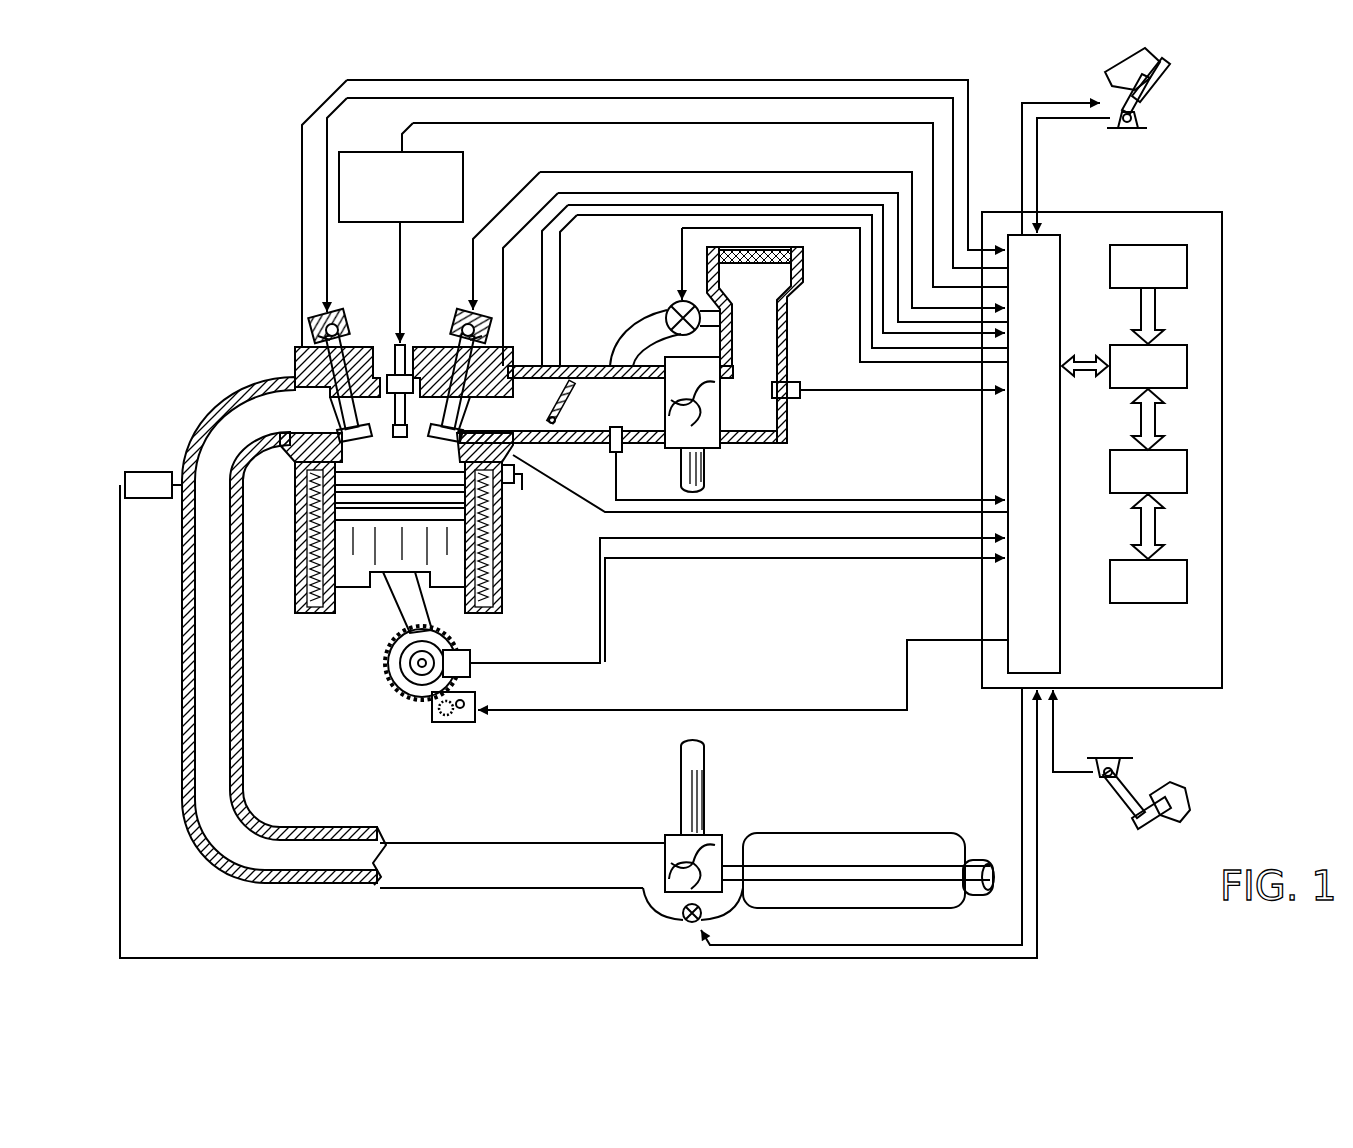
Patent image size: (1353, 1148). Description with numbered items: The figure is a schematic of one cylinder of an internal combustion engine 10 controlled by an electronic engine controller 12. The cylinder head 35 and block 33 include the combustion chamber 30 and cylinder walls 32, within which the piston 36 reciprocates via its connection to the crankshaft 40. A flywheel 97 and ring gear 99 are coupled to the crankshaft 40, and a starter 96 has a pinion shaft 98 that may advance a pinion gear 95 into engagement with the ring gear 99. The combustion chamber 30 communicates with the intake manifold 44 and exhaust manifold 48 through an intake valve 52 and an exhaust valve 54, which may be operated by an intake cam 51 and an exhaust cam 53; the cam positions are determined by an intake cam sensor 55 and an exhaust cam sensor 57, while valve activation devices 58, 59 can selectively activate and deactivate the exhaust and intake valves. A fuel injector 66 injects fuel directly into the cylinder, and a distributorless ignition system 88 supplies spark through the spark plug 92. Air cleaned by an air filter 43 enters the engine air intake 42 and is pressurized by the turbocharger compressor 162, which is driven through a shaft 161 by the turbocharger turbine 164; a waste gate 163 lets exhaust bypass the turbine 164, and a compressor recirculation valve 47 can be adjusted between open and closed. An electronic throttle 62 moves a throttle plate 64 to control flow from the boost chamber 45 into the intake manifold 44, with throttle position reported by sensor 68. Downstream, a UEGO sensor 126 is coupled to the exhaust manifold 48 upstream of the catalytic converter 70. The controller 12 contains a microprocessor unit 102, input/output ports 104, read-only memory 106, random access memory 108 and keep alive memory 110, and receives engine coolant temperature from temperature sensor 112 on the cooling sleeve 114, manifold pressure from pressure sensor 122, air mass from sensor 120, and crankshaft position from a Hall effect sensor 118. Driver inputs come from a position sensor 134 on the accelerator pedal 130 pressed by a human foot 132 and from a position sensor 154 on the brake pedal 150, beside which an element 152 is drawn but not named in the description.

The internal combustion engine 10 is at (227, 300).
The electronic engine controller 12 is at (1210, 212).
The combustion chamber 30 is at (398, 448).
The cylinder walls 32 is at (343, 607).
The block 33 is at (288, 496).
The cylinder head 35 is at (289, 347).
The piston 36 is at (380, 553).
The crankshaft 40 is at (413, 683).
The engine air intake 42 is at (621, 275).
The air filter 43 is at (768, 263).
The intake manifold 44 is at (537, 421).
The boost chamber 45 is at (643, 421).
The compressor recirculation valve 47 is at (668, 305).
The exhaust manifold 48 is at (276, 424).
The intake cam 51 is at (462, 312).
The intake valve 52 is at (448, 420).
The exhaust cam 53 is at (343, 315).
The exhaust valve 54 is at (343, 428).
The intake cam sensor 55 is at (484, 336).
The exhaust cam sensor 57 is at (318, 335).
The valve activation device 58 is at (347, 331).
The valve activation device 59 is at (462, 340).
The electronic throttle 62 is at (567, 408).
The throttle plate 64 is at (556, 419).
The fuel injector 66 is at (514, 480).
The throttle position sensor 68 is at (500, 369).
The catalytic converter 70 is at (790, 833).
The distributorless ignition system 88 is at (352, 152).
The spark plug 92 is at (408, 343).
The pinion gear 95 is at (467, 722).
The starter 96 is at (474, 720).
The flywheel 97 is at (390, 672).
The pinion shaft 98 is at (450, 722).
The ring gear 99 is at (427, 710).
The microprocessor unit 102 is at (1188, 365).
The input/output ports 104 is at (1062, 245).
The read-only memory 106 is at (1188, 268).
The random access memory 108 is at (1188, 470).
The keep alive memory 110 is at (1188, 578).
The temperature sensor 112 is at (522, 490).
The cooling sleeve 114 is at (502, 563).
The Hall effect sensor 118 is at (470, 652).
The air mass sensor 120 is at (797, 382).
The pressure sensor 122 is at (610, 450).
The Universal Exhaust Gas Oxygen sensor 126 is at (125, 473).
The accelerator pedal 130 is at (1100, 95).
The human foot 132 is at (1162, 78).
The position sensor 134 is at (1140, 116).
The brake pedal 150 is at (1125, 818).
The brake pedal 152 is at (1175, 800).
The position sensor 154 is at (1090, 762).
The shaft 161 is at (680, 470).
The turbocharger compressor 162 is at (706, 430).
The waste gate 163 is at (684, 920).
The turbocharger turbine 164 is at (673, 835).